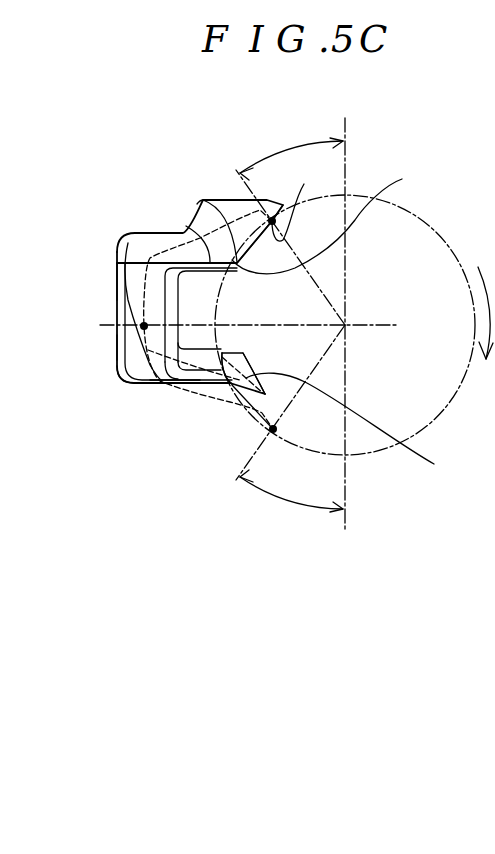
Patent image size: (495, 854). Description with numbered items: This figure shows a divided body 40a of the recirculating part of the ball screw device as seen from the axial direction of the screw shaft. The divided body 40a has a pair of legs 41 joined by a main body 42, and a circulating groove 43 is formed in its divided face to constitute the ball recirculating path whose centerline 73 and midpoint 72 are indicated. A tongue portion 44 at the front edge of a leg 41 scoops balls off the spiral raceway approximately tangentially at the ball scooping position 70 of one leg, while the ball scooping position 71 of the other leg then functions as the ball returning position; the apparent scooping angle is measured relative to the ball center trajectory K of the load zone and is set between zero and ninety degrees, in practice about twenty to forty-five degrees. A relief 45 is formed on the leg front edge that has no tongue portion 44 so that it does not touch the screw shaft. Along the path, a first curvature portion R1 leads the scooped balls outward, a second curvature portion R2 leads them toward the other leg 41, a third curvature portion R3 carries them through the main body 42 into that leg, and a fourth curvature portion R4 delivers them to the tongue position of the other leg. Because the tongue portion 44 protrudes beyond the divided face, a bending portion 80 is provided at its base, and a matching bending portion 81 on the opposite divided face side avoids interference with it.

The divided body 40a is at (117, 253).
The leg 41 is at (195, 381).
The main body 42 is at (118, 282).
The circulating groove 43 is at (137, 336).
The tongue portion 44 is at (351, 424).
The relief 45 is at (299, 210).
The ball scooping position of one leg 70 is at (273, 429).
The ball scooping position of the other leg 71 is at (272, 221).
The midpoint of the ball recirculating path 72 is at (144, 326).
The centerline of the ball recirculating path 73 is at (185, 227).
The bending portion 80 is at (228, 375).
The bending portion 81 is at (327, 224).
The first curvature portion R1 is at (242, 402).
The second curvature portion R2 is at (120, 367).
The third curvature portion R3 is at (128, 243).
The fourth curvature portion R4 is at (199, 200).
The ball center trajectory K is at (420, 219).